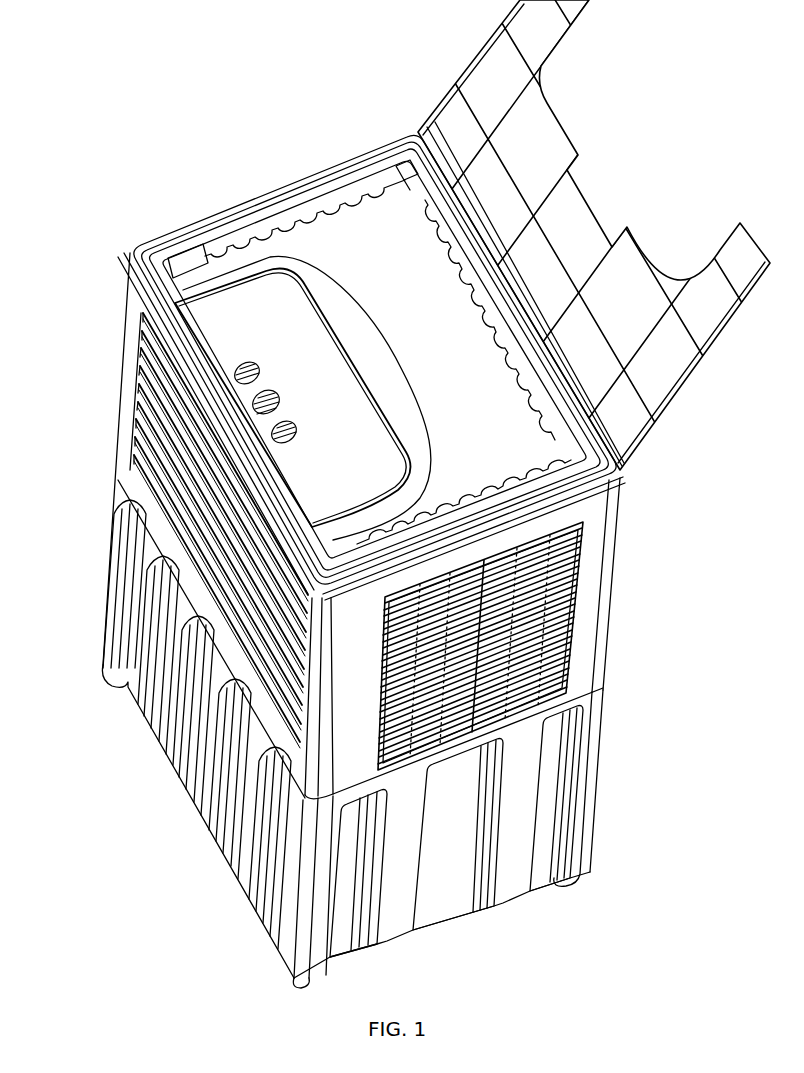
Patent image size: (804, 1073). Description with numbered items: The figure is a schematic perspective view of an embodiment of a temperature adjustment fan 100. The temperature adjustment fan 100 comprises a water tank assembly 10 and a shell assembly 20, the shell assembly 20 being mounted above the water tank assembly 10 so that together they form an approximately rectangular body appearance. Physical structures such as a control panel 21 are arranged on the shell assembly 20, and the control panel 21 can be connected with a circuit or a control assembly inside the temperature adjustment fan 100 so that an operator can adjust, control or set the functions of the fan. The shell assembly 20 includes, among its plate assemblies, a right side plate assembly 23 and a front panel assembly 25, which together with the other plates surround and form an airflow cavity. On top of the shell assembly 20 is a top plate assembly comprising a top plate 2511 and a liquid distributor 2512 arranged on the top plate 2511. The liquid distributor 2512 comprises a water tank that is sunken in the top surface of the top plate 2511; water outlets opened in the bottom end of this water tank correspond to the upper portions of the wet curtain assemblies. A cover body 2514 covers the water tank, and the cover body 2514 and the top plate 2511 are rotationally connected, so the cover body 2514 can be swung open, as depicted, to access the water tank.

The temperature adjustment fan 100 is at (242, 53).
The water tank assembly 10 is at (578, 768).
The shell assembly 20 is at (600, 597).
The control panel 21 is at (370, 430).
The right side plate assembly 23 is at (560, 637).
The front panel assembly 25 is at (140, 372).
The top plate 2511 is at (320, 238).
The liquid distributor 2512 is at (400, 180).
The cover body 2514 is at (566, 150).